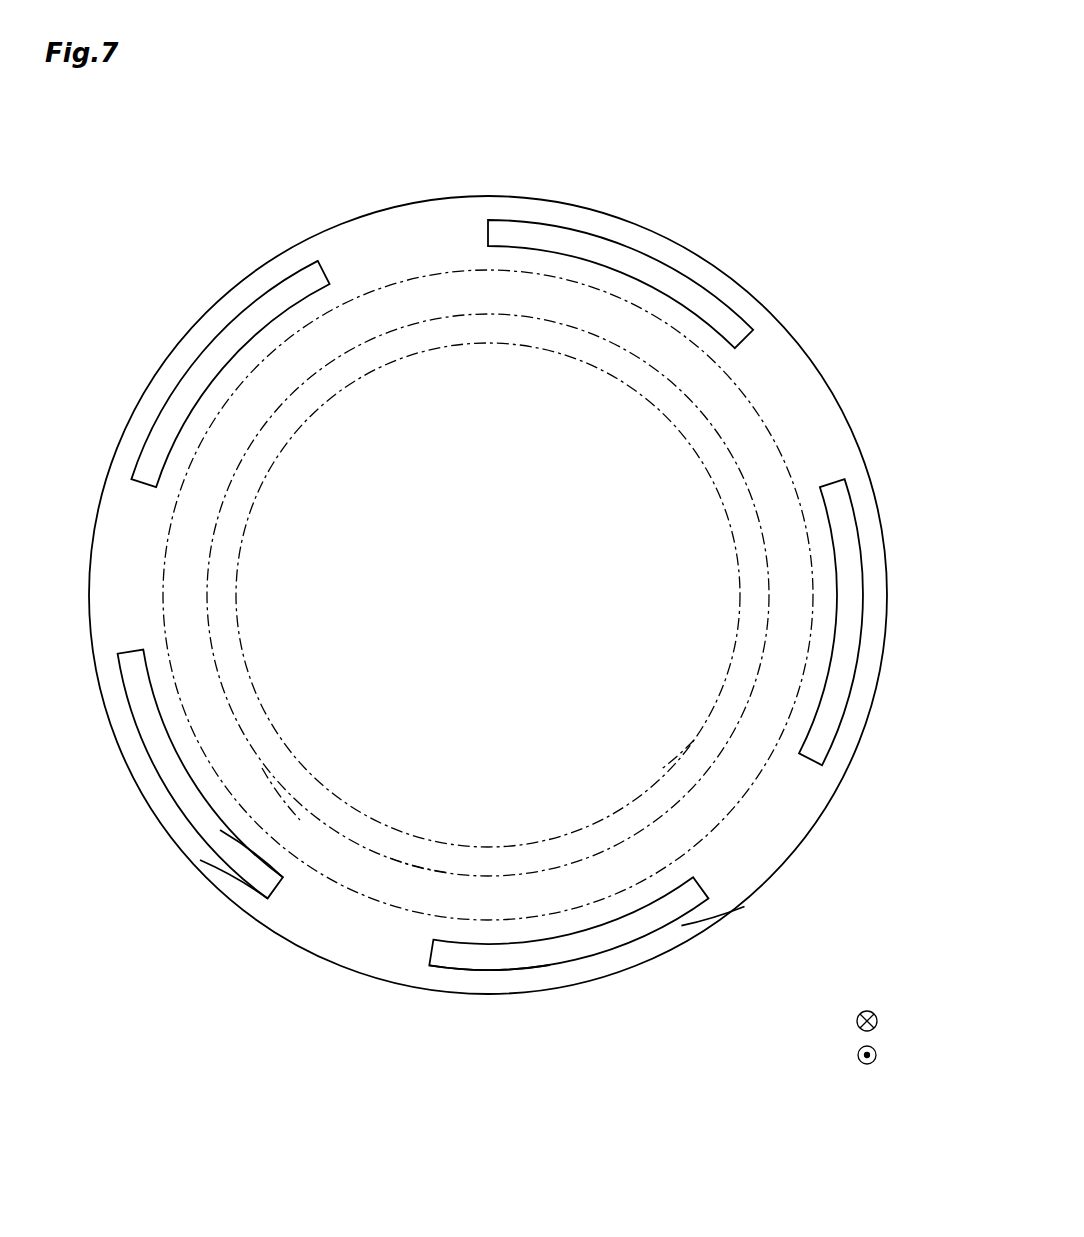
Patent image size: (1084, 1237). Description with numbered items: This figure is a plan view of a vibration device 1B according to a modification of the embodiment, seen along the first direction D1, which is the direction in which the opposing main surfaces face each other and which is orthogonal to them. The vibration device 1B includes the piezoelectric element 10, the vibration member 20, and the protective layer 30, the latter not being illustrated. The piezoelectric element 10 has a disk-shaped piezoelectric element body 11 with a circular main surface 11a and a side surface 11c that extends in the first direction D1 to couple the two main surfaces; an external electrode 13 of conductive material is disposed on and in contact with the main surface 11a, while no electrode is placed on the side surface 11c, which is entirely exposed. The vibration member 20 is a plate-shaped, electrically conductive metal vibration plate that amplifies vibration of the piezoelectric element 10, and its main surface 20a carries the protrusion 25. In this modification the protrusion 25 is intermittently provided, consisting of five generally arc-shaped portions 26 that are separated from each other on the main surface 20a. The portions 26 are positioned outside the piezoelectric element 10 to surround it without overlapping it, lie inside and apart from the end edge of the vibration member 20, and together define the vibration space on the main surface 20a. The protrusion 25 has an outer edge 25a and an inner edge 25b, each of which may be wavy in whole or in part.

The vibration device 1B is at (702, 120).
The piezoelectric element 10 is at (390, 863).
The piezoelectric element body 11 is at (342, 350).
The main surface 11a is at (703, 747).
The side surface 11c is at (260, 768).
The external electrode 13 is at (740, 580).
The vibration member 20 is at (217, 893).
The main surface 20a is at (710, 915).
The protrusion 25 is at (468, 975).
The outer edge 25a is at (252, 890).
The inner edge 25b is at (273, 863).
The portions 26 is at (620, 253).
The protective layer 30 is at (768, 427).
The first direction D1 is at (877, 1024).